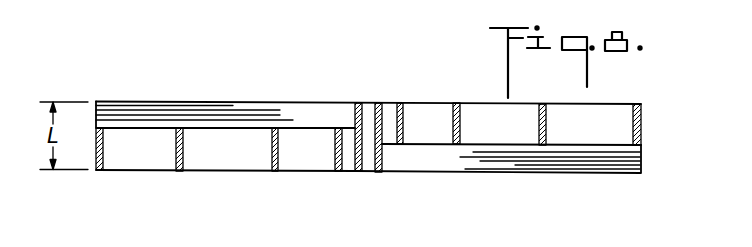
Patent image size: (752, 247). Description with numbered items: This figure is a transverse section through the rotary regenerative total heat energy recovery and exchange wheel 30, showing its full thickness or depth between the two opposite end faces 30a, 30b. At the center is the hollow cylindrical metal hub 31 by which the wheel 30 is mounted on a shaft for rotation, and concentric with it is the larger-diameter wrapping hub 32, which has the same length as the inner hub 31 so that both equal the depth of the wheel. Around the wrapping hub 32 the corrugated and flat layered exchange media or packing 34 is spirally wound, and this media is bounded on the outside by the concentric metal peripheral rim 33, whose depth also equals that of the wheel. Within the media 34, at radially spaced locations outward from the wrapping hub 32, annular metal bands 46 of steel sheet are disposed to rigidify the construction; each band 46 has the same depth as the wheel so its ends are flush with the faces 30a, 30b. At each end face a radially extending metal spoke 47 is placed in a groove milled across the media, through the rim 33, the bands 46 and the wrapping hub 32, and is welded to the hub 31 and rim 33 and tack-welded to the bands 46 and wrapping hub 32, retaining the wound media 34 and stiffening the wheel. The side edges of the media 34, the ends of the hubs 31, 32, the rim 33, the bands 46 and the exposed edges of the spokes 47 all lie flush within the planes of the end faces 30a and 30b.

The rotary regenerative total heat energy recovery and exchange wheel 30 is at (370, 187).
The end face 30a is at (212, 101).
The end face 30b is at (293, 172).
The hollow cylindrical metal hub 31 is at (377, 103).
The wrapping hub 32 is at (399, 103).
The peripheral rim 33 is at (641, 128).
The exchange media or packing 34 is at (228, 152).
The annular metal band 46 is at (177, 172).
The metal spoke 47 is at (297, 102).